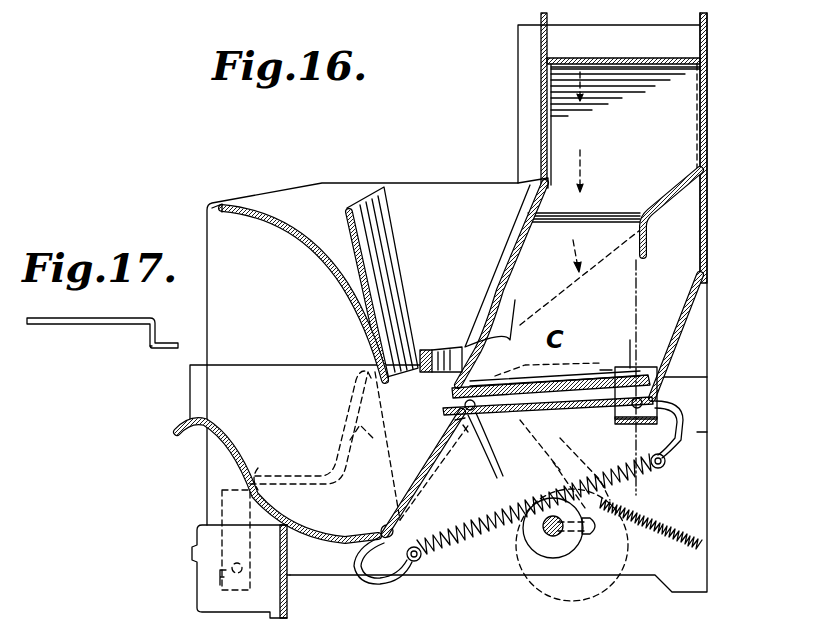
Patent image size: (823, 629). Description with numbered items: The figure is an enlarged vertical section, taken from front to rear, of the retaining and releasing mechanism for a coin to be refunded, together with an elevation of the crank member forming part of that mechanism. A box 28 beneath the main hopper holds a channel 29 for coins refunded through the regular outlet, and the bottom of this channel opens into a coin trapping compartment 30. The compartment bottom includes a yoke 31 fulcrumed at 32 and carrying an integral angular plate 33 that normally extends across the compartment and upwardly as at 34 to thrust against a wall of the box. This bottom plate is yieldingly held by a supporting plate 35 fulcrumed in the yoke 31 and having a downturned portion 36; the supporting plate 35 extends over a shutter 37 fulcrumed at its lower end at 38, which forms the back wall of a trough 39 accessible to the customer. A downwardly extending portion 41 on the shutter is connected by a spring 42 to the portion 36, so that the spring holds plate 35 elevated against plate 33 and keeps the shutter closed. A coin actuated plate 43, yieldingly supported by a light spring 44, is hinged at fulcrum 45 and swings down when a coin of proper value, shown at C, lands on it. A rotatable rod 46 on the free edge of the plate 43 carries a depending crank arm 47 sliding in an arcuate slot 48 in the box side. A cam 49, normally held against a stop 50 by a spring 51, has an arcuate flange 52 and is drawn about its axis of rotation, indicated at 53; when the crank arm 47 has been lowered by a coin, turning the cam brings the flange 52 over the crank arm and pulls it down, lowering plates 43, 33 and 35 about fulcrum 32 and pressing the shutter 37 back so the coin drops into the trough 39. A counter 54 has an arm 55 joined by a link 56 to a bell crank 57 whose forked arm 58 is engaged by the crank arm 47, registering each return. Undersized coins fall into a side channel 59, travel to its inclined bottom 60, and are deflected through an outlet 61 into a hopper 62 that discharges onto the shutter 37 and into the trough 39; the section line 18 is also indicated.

In FIG. 16, the section line 18 is at (631, 204).
In FIG. 16, the box 28 is at (333, 183).
In FIG. 16, the channel 29 is at (690, 137).
In FIG. 16, the coin trapping compartment 30 is at (665, 240).
In FIG. 16, the yoke 31 is at (621, 377).
In FIG. 16, the fulcrum 32 is at (665, 392).
In FIG. 16, the angular plate 33 is at (560, 408).
In FIG. 16, the upward extension of the plate 34 is at (686, 303).
In FIG. 16, the supporting plate 35 is at (512, 405).
In FIG. 16, the downturned portion 36 is at (690, 437).
In FIG. 16, the shutter 37 is at (486, 458).
In FIG. 16, the fulcrum 38 is at (395, 528).
In FIG. 16, the trough 39 is at (318, 484).
In FIG. 16, the downwardly extending portion 41 is at (386, 580).
In FIG. 16, the spring 42 is at (536, 513).
In FIG. 16, the coin actuated plate 43 is at (588, 378).
In FIG. 16, the light spring 44 is at (606, 375).
In FIG. 16, the fulcrum 45 is at (644, 368).
In FIG. 17, the rotatable rod 46 is at (82, 328).
In FIG. 16, the rotatable rod 46 is at (462, 385).
In FIG. 17, the crank arm 47 is at (152, 352).
In FIG. 16, the crank arm 47 is at (458, 402).
In FIG. 16, the arcuate slot 48 is at (490, 480).
In FIG. 16, the cam 49 is at (572, 549).
In FIG. 16, the stop 50 is at (551, 445).
In FIG. 16, the spring 51 is at (672, 520).
In FIG. 16, the arcuate laterally extending flange 52 is at (566, 498).
In FIG. 16, the shaft 53 is at (560, 534).
In FIG. 16, the counter 54 is at (205, 565).
In FIG. 16, the arm of the counter 55 is at (220, 500).
In FIG. 16, the link 56 is at (335, 425).
In FIG. 16, the bell crank 57 is at (345, 455).
In FIG. 16, the forked arm 58 is at (445, 432).
In FIG. 16, the channel 59 is at (690, 52).
In FIG. 16, the inclined bottom 60 is at (604, 245).
In FIG. 16, the outlet 61 is at (424, 338).
In FIG. 16, the hopper 62 is at (365, 315).